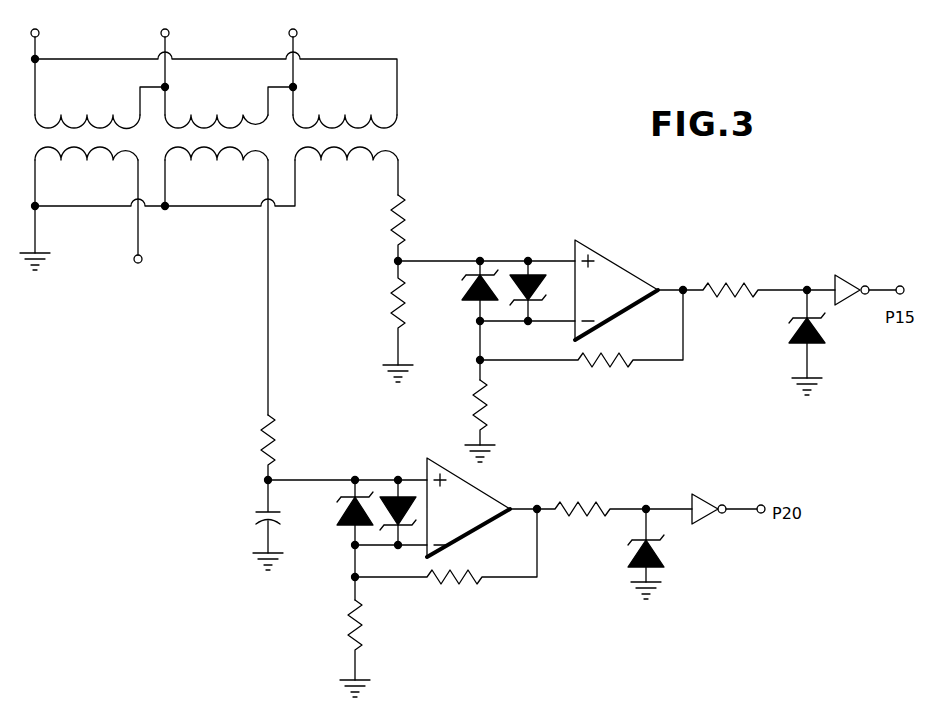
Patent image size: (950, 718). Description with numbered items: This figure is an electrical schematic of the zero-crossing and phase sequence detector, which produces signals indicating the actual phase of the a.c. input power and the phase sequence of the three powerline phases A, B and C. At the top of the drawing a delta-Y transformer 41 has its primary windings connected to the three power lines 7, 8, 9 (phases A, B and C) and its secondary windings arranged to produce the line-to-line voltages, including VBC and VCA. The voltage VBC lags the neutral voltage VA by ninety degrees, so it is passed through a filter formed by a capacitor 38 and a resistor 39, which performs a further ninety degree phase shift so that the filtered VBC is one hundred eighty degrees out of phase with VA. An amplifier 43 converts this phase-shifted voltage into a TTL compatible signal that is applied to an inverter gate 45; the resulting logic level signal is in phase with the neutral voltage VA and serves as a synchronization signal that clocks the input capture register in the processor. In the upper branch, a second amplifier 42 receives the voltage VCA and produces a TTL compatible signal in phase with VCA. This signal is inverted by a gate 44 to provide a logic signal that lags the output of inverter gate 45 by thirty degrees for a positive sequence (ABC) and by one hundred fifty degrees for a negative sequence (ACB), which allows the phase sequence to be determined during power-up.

The power line 7 is at (46, 31).
The power line 8 is at (172, 30).
The power line 9 is at (300, 30).
The delta-Y transformer 41 is at (405, 134).
The second amplifier 42 is at (613, 304).
The amplifier 43 is at (465, 524).
The gate 44 is at (852, 283).
The inverter gate 45 is at (708, 498).
The resistor 39 is at (265, 433).
The capacitor 38 is at (263, 507).